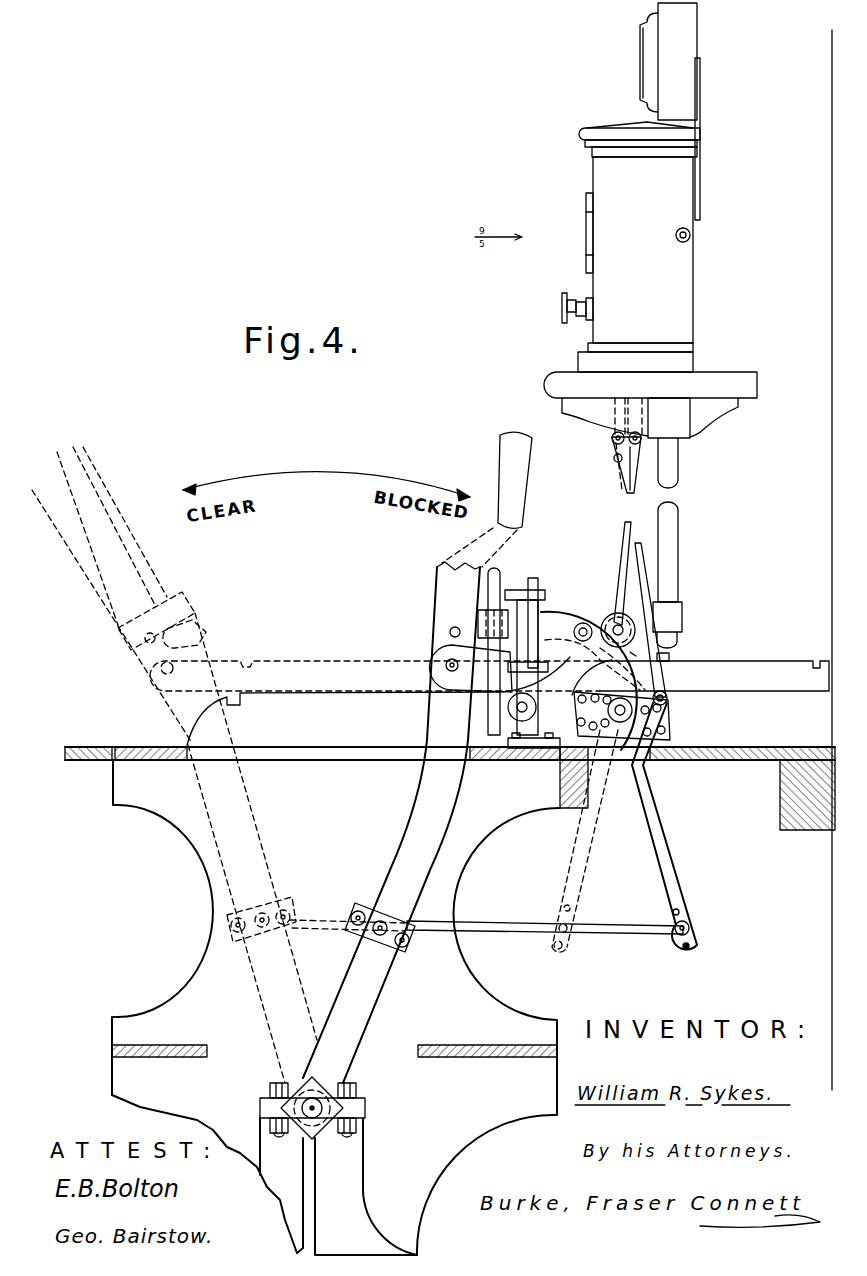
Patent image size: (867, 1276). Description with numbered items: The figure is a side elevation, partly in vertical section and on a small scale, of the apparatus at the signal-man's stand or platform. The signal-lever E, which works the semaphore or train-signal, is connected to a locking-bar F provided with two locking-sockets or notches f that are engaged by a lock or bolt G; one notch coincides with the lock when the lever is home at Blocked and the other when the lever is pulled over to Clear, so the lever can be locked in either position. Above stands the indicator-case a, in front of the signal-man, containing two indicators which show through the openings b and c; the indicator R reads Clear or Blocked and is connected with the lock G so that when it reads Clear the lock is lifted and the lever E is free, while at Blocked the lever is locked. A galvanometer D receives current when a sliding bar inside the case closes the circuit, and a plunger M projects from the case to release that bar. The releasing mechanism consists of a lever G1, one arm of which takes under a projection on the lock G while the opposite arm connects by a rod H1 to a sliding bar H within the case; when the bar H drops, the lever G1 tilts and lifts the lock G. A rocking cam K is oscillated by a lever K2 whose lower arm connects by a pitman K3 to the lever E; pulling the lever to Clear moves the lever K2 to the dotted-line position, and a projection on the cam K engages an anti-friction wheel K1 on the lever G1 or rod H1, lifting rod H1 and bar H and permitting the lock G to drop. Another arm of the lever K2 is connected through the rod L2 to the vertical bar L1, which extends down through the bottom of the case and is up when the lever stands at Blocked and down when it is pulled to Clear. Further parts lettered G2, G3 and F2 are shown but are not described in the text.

The galvanometer D is at (670, 111).
The indicator-case a is at (650, 260).
The indicator R is at (566, 233).
The opening b is at (579, 226).
The opening c is at (581, 250).
The plunger M is at (562, 308).
The sliding bar H is at (640, 418).
The vertical bar L1 is at (612, 438).
The rod L2 is at (614, 459).
The locking-bar F is at (489, 676).
The locking-sockets or notches f is at (246, 661).
The signal-lever E is at (282, 757).
The lock or bolt G is at (531, 576).
The lever G1 is at (583, 622).
The wheel segment G2 is at (592, 662).
The toothed segment G3 is at (621, 694).
The roller F2 is at (537, 709).
The rod H1 is at (619, 583).
The rocking cam K is at (651, 624).
The anti-friction wheel K1 is at (642, 650).
The lever K2 is at (680, 881).
The pitman K3 is at (486, 928).